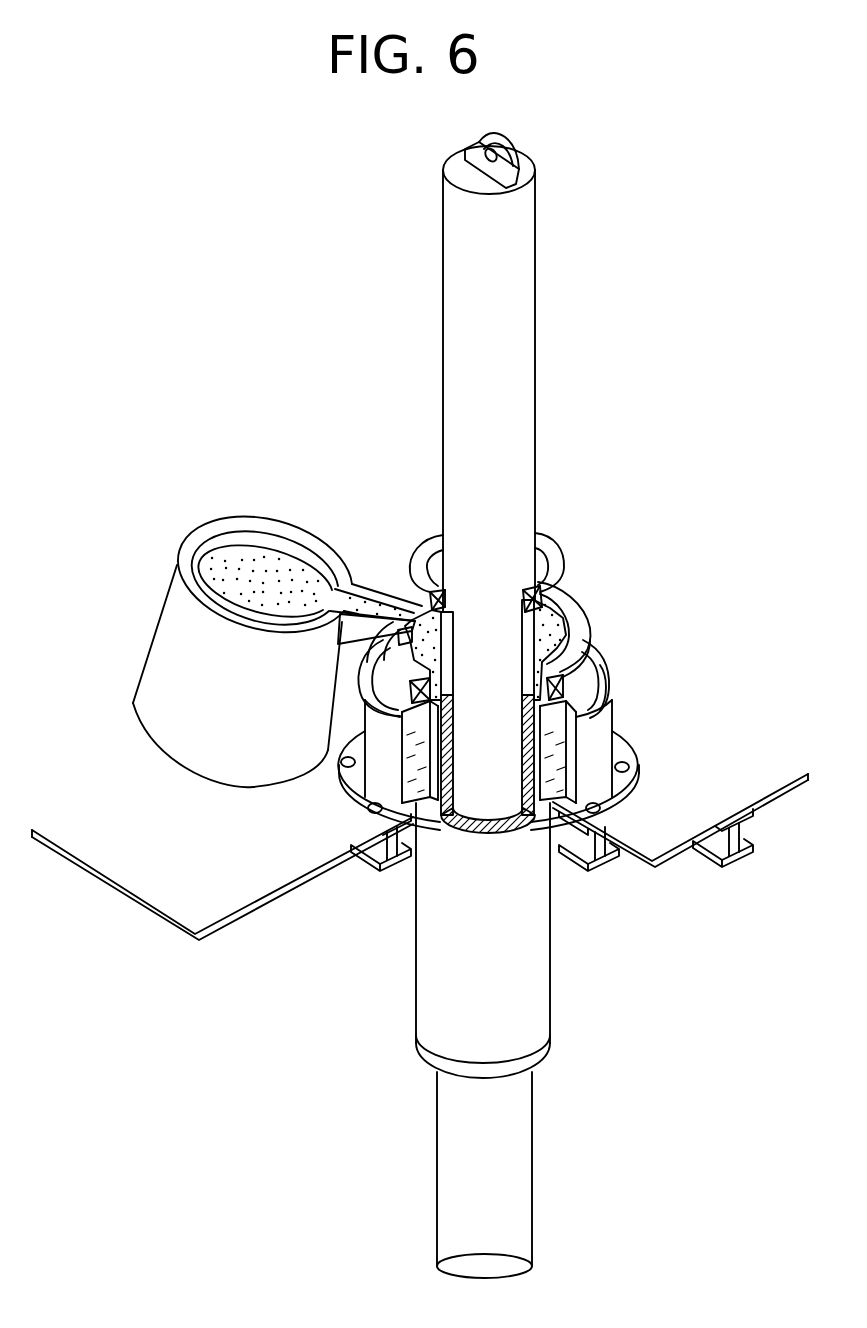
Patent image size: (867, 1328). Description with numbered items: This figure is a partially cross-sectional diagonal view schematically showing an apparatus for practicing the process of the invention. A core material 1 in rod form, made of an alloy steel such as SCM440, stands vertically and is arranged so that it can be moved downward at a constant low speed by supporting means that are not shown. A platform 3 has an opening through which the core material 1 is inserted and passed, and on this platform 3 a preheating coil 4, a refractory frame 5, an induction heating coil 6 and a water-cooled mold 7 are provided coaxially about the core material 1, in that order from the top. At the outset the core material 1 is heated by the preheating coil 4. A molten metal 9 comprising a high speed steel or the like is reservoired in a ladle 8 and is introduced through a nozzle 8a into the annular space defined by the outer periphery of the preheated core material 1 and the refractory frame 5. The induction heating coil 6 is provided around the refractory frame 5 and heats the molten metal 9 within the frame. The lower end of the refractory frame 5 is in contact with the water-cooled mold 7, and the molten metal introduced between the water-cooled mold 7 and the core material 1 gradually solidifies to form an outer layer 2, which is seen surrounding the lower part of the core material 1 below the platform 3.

The core material 1 is at (522, 403).
The outer layer 2 is at (535, 963).
The platform 3 is at (712, 791).
The preheating coil 4 is at (548, 552).
The refractory frame 5 is at (580, 617).
The induction heating coil 6 is at (585, 673).
The water-cooled mold 7 is at (600, 745).
The ladle 8 is at (183, 757).
The nozzle 8a is at (350, 628).
The molten metal 9 is at (280, 565).